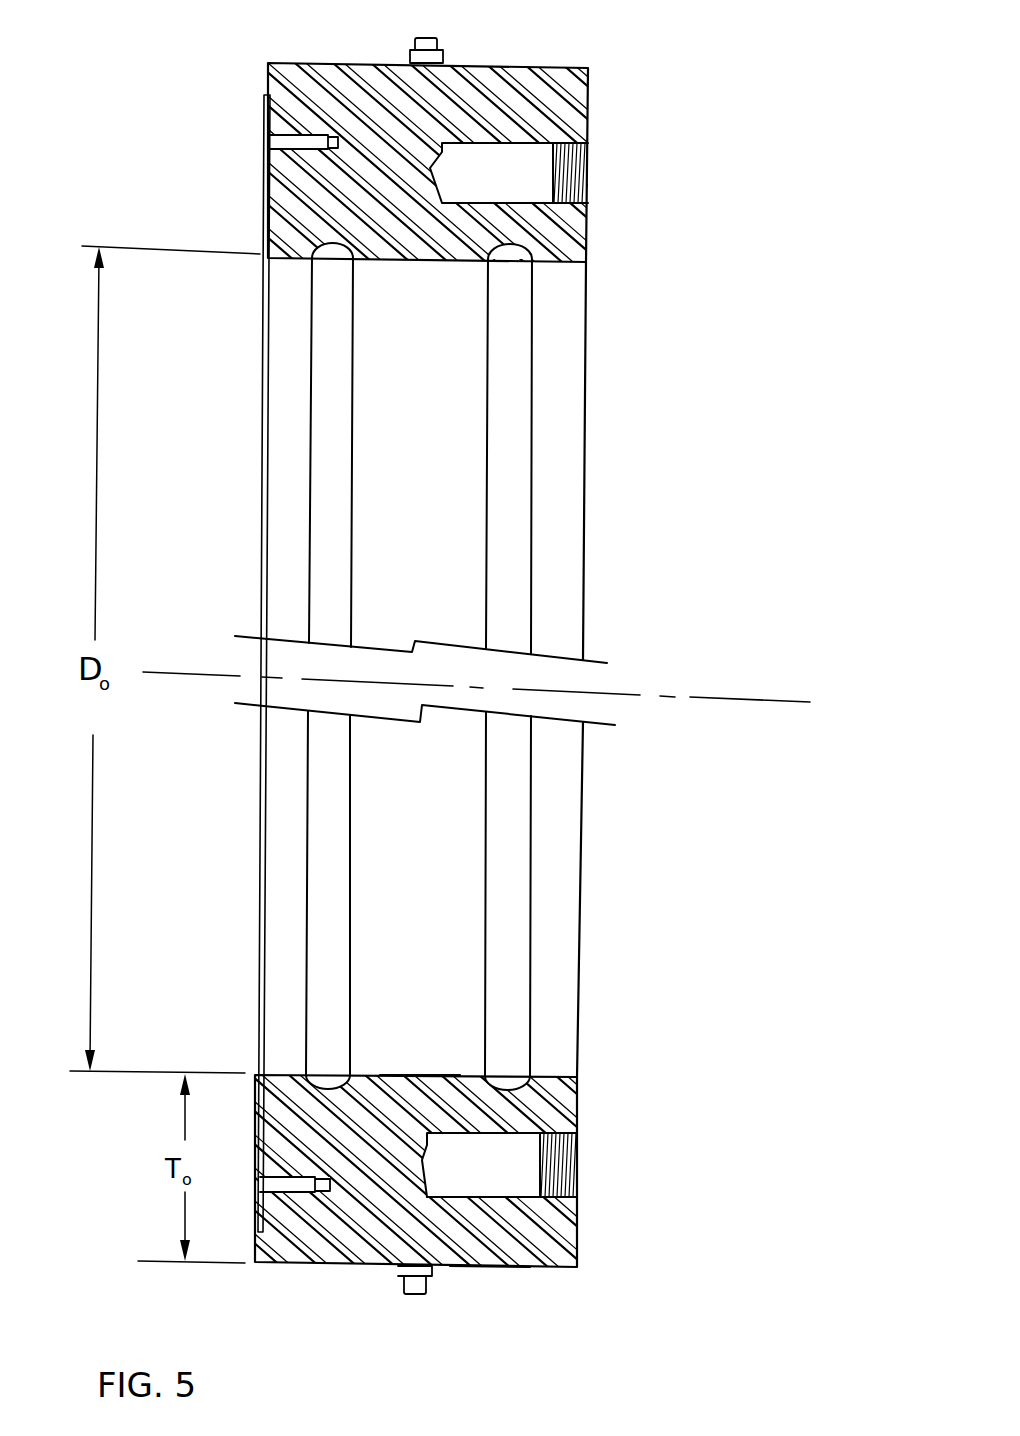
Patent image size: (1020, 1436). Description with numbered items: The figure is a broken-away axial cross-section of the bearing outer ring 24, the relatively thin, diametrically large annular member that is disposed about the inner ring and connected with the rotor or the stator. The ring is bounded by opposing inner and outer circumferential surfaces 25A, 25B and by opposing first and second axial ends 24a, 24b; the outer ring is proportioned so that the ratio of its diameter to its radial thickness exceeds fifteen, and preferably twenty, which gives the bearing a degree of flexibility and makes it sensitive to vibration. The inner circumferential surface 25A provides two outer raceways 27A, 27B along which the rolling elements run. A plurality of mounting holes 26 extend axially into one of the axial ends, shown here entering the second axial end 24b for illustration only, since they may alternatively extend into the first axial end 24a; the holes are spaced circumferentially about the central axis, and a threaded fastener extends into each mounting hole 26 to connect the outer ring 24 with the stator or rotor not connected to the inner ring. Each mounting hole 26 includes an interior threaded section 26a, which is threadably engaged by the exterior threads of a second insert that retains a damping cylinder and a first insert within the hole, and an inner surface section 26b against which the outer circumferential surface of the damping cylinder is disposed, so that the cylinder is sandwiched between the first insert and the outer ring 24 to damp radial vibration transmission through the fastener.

The outer annular ring 24 is at (173, 120).
The first axial end 24a is at (266, 168).
The second axial end 24b is at (587, 102).
The inner circumferential surface 25A is at (420, 1075).
The outer circumferential surface 25B is at (490, 1268).
The mounting hole 26 is at (493, 143).
The interior threaded section 26a is at (586, 169).
The inner surface section 26b is at (483, 204).
The first outer raceway 27A is at (335, 376).
The second outer raceway 27B is at (519, 343).